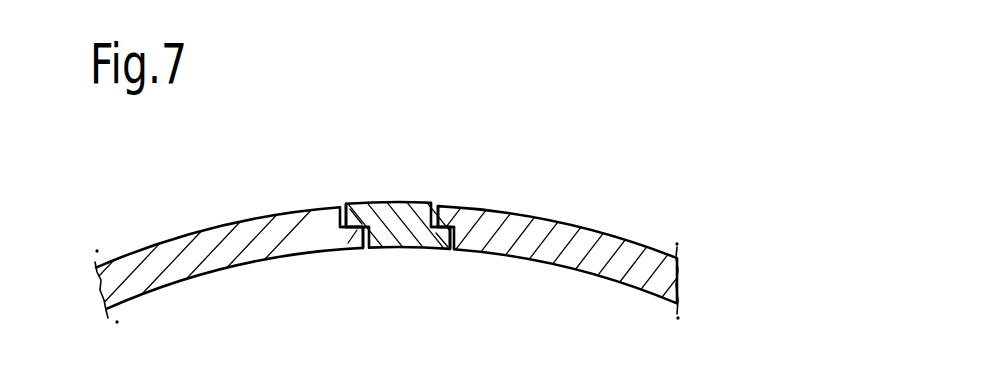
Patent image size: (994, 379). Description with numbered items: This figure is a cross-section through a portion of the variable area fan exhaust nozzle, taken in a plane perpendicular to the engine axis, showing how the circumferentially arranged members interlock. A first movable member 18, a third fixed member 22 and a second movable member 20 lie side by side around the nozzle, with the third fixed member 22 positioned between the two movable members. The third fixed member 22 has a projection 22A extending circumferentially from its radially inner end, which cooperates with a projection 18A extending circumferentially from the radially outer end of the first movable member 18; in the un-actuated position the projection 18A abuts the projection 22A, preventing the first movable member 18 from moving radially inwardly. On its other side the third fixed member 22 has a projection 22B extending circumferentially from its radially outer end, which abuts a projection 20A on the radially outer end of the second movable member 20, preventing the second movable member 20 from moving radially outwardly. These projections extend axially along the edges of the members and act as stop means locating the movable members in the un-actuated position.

The first movable member 18 is at (552, 222).
The projection of first movable member 18A is at (442, 212).
The second movable member 20 is at (232, 235).
The projection of second movable member 20A is at (352, 237).
The third fixed member 22 is at (398, 225).
The projection of third fixed member 22A is at (435, 237).
The projection of third fixed member 22B is at (355, 208).